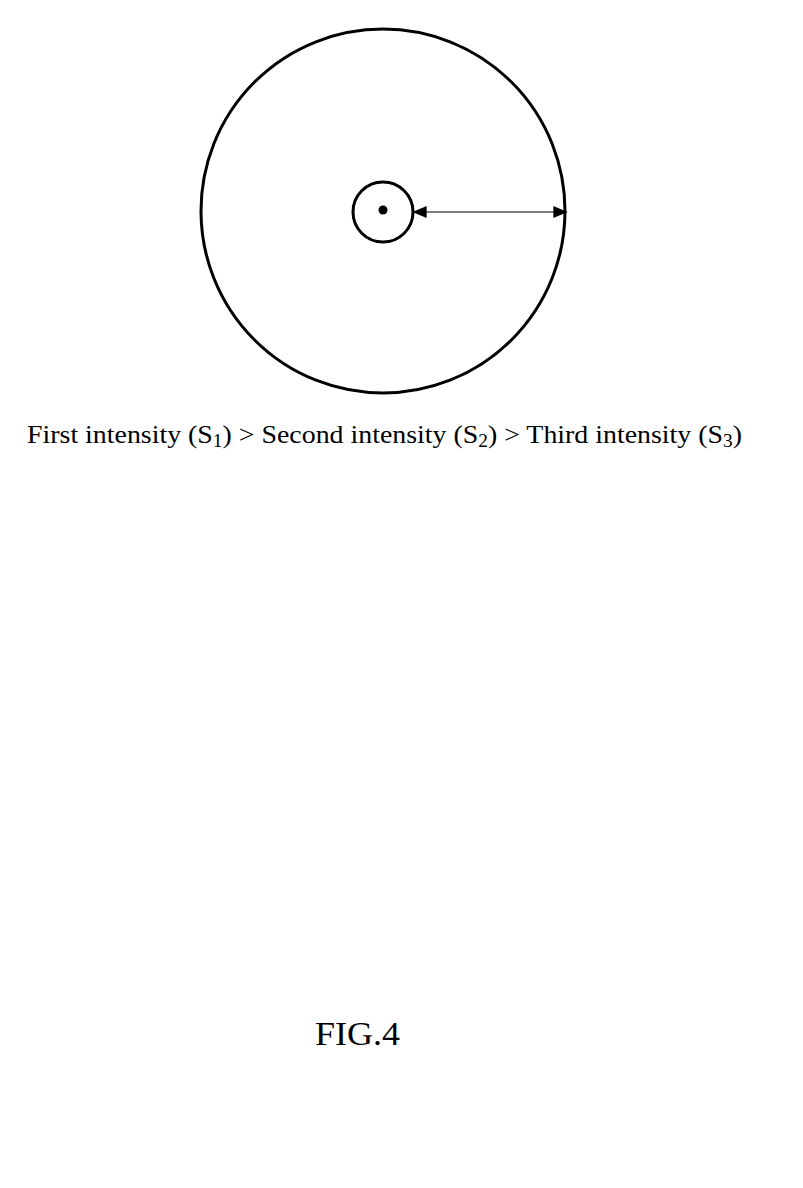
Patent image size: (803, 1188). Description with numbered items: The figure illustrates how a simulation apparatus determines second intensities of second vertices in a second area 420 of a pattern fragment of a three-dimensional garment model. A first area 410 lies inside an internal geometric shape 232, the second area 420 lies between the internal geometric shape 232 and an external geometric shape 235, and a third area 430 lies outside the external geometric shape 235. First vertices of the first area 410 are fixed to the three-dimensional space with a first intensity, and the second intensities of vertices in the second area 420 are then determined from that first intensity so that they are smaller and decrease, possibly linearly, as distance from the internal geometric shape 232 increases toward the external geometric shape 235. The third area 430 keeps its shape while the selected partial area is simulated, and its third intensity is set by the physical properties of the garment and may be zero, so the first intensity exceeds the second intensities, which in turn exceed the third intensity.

The internal geometric shape 232 is at (380, 183).
The external geometric shape 235 is at (543, 113).
The first area 410 is at (374, 194).
The second area 420 is at (477, 313).
The third area 430 is at (667, 226).